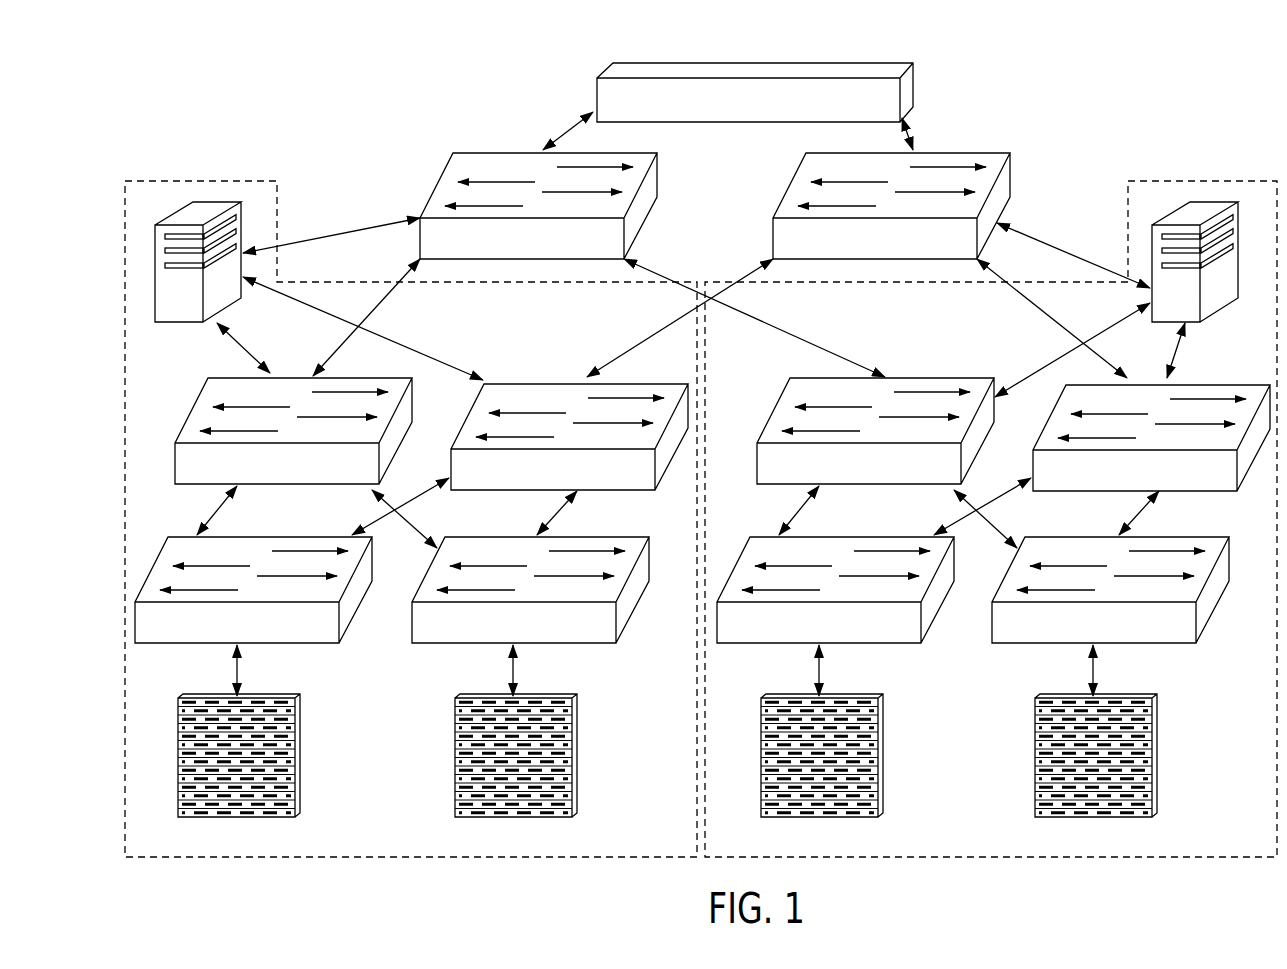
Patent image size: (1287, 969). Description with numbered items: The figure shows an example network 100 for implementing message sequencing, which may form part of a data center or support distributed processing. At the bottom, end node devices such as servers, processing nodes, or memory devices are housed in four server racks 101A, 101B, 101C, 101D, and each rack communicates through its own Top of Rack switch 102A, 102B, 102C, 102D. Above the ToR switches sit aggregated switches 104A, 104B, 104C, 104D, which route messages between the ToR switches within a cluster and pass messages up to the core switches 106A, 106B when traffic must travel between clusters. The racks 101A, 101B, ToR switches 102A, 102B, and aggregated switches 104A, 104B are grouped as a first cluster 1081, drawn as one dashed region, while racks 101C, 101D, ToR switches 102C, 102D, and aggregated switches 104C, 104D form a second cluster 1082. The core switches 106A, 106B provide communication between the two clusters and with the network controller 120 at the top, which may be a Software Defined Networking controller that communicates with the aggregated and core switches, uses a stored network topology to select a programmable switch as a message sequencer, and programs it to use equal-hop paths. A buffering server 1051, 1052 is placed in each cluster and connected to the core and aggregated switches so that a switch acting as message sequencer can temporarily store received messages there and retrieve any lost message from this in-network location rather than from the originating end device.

The network 100 is at (1030, 30).
The network controller 120 is at (914, 82).
The core switch 106A is at (437, 186).
The core switch 106B is at (788, 188).
The cluster 1081 is at (197, 180).
The cluster 1082 is at (1197, 180).
The buffering server 1051 is at (214, 200).
The buffering server 1052 is at (1215, 200).
The aggregated switch 104A is at (283, 377).
The aggregated switch 104B is at (533, 382).
The aggregated switch 104C is at (935, 377).
The aggregated switch 104D is at (1260, 383).
The Top of Rack switch 102A is at (312, 643).
The Top of Rack switch 102B is at (602, 643).
The Top of Rack switch 102C is at (885, 643).
The Top of Rack switch 102D is at (1170, 643).
The server rack 101A is at (300, 762).
The server rack 101B is at (577, 762).
The server rack 101C is at (883, 762).
The server rack 101D is at (1157, 762).